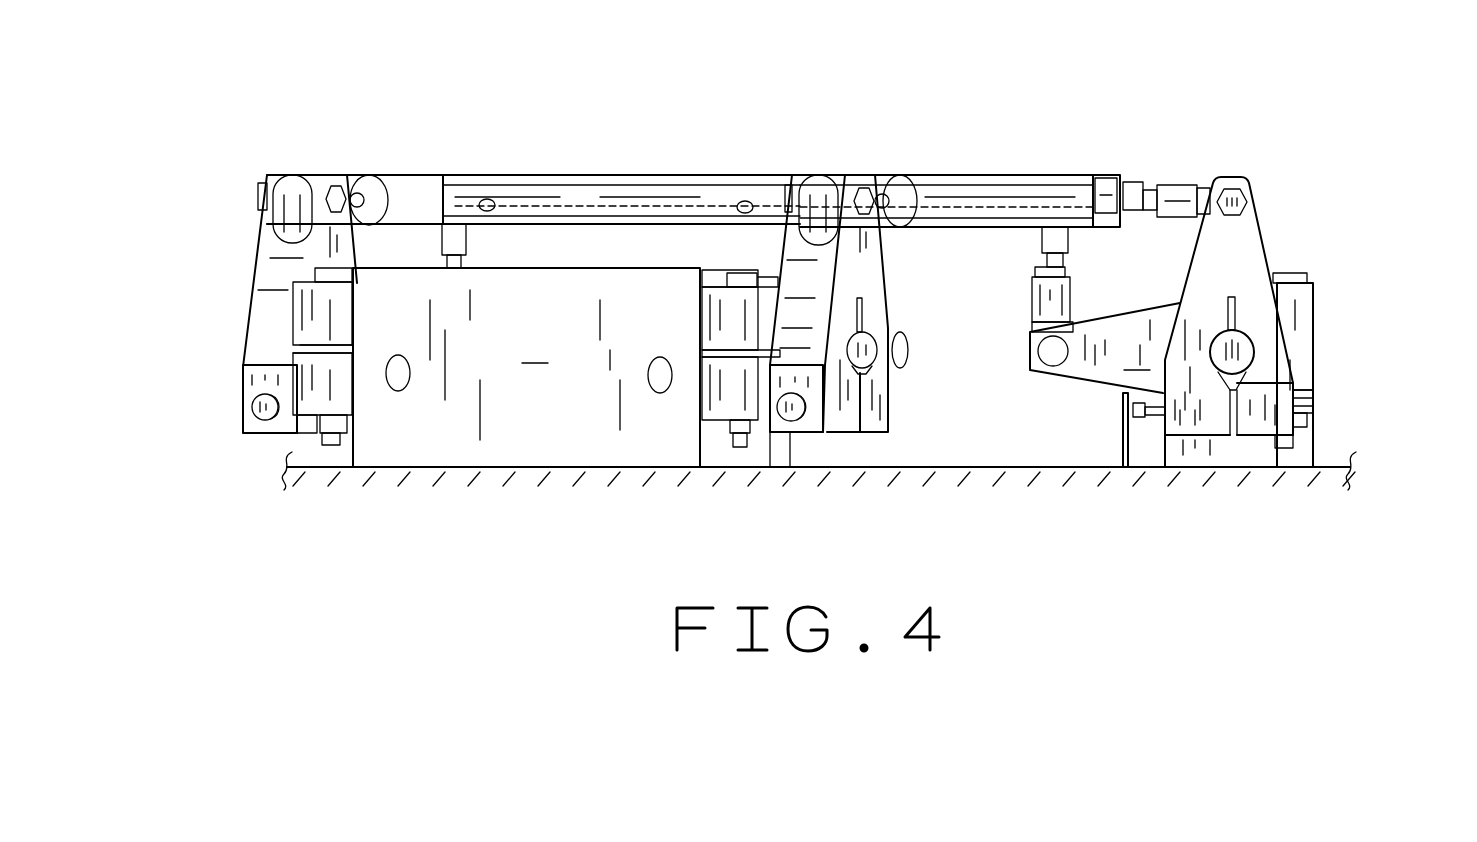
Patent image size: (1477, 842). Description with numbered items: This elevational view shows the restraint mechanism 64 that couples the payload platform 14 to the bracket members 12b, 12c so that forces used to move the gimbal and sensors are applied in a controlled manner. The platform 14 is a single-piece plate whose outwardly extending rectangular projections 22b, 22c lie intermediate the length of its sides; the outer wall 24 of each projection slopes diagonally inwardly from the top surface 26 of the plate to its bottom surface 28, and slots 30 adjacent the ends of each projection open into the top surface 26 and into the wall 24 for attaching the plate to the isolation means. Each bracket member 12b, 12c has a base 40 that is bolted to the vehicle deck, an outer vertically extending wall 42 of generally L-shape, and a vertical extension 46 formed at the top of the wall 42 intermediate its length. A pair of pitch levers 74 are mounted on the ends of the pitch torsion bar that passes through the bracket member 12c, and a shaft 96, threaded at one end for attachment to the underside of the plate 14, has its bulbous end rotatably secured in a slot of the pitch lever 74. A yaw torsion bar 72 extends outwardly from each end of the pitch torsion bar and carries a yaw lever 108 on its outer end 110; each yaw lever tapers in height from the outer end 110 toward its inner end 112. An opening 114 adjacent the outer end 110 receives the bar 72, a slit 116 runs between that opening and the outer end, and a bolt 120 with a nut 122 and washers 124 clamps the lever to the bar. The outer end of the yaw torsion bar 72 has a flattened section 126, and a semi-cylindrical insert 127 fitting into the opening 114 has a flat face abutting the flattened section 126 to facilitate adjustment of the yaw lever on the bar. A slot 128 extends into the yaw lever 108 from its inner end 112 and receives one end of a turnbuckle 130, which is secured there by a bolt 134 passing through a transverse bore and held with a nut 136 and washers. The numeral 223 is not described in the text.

The bracket member 12b is at (497, 485).
The bracket member 12c is at (1125, 403).
The platform 14 is at (951, 152).
The projection 22b is at (620, 175).
The projection 22c is at (1027, 175).
The outer wall 24 is at (622, 208).
The top surface 26 is at (438, 165).
The bottom surface 28 is at (402, 236).
The slot 30 is at (483, 199).
The base 40 is at (1245, 470).
The outer wall 42 is at (1313, 312).
The vertical extension 46 is at (560, 267).
The restraint mechanism 64 is at (1300, 143).
The yaw torsion bar 72 is at (1226, 300).
The pitch lever 74 is at (330, 400).
The shaft 96 is at (1040, 240).
The yaw lever 108 is at (232, 380).
The outer end 110 is at (257, 433).
The inner end 112 is at (275, 175).
The opening 114 is at (1248, 330).
The slit 116 is at (1240, 408).
The bolt 120 is at (255, 420).
The nut 122 is at (1125, 420).
The washers 124 is at (1195, 423).
The flattened section 126 is at (1193, 390).
The semi-cylindrical insert 127 is at (864, 380).
The slot 128 is at (275, 225).
The turnbuckle 130 is at (1113, 187).
The bolt 134 is at (260, 198).
The nut 136 is at (345, 183).
The nut 223 is at (830, 151).